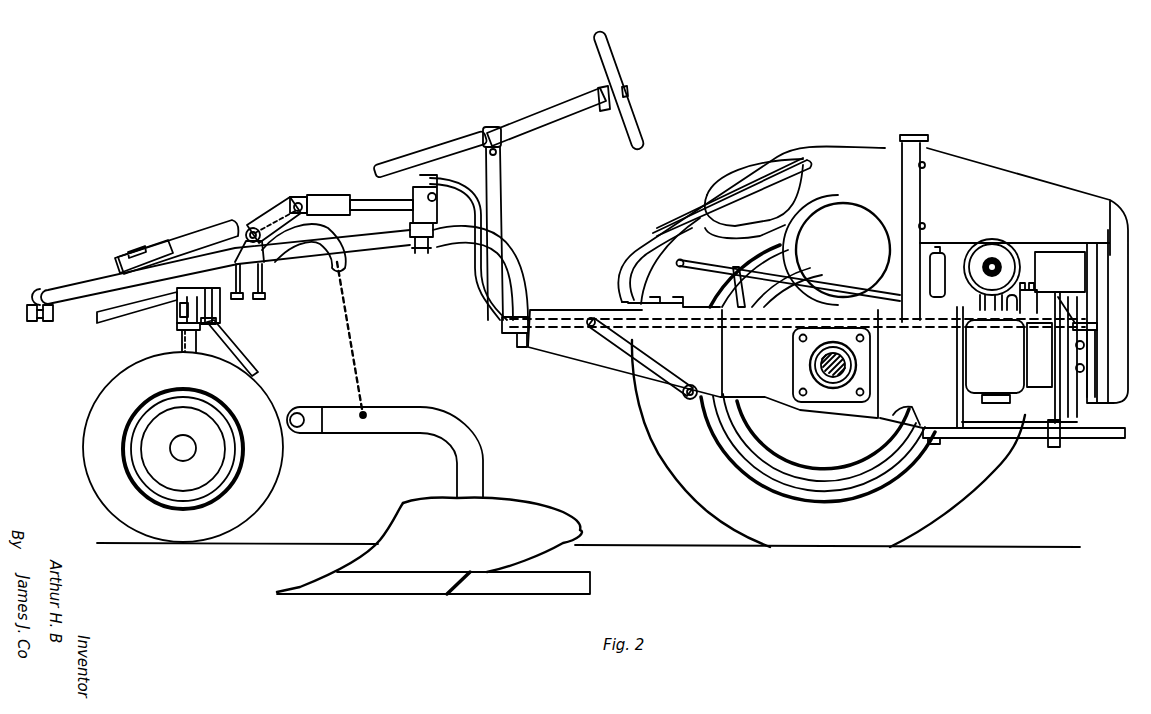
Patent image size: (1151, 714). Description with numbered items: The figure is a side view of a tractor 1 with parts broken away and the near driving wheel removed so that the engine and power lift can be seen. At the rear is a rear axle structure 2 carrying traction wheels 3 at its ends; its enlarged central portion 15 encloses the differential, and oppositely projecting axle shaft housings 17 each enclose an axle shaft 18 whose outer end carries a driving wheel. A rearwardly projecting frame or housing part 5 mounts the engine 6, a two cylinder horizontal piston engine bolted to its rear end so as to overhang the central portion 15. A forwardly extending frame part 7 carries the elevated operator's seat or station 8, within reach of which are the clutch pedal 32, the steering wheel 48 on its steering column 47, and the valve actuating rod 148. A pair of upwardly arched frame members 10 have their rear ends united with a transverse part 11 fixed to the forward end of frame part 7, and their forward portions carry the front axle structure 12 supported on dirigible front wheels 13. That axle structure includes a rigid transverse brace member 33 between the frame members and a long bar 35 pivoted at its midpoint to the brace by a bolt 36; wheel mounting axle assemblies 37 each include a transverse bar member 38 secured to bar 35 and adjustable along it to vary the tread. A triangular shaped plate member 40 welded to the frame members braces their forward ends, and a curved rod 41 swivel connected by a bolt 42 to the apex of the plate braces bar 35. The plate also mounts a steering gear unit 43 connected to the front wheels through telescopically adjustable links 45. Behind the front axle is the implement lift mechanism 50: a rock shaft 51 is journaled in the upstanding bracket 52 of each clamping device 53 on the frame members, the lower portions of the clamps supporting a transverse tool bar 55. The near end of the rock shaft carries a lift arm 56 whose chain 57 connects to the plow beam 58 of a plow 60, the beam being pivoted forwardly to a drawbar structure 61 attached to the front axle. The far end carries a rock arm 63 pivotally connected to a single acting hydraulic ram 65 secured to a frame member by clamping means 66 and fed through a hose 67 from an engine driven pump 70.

The tractor 1 is at (873, 281).
The rear axle structure 2 is at (800, 364).
The traction wheels 3 is at (963, 500).
The rearwardly projecting frame or housing part 5 is at (893, 420).
The engine 6 is at (995, 361).
The forwardly extending frame part 7 is at (580, 310).
The operator's seat or station 8 is at (695, 222).
The upwardly arched frame members 10 is at (460, 251).
The transverse part 11 is at (514, 340).
The front axle structure 12 is at (184, 310).
The dirigible front wheels 13 is at (282, 492).
The enlarged central portion 15 is at (786, 290).
The axle shaft housings 17 is at (855, 362).
The axle shaft 18 is at (822, 366).
The clutch pedal 32 is at (626, 352).
The rigid transverse brace member 33 is at (220, 305).
The bar 35 is at (197, 340).
The bolt 36 is at (222, 316).
The wheel mounting axle assemblies 37 is at (178, 340).
The transverse bar member 38 is at (184, 340).
The triangular shaped plate member 40 is at (92, 285).
The curved rod 41 is at (38, 297).
The bolt 42 is at (30, 321).
The steering gear unit 43 is at (139, 250).
The telescopically adjustable links 45 is at (103, 314).
The steering column 47 is at (411, 158).
The steering wheel 48 is at (640, 140).
The implement lift mechanism 50 is at (273, 214).
The rock shaft 51 is at (240, 222).
The upstanding bracket 52 is at (243, 255).
The clamping device 53 is at (266, 282).
The transverse bar 55 is at (265, 296).
The lift arm 56 is at (318, 236).
The chain 57 is at (357, 331).
The plow beam 58 is at (413, 402).
The plow 60 is at (433, 546).
The drawbar structure 61 is at (248, 355).
The rock arm 63 is at (298, 203).
The single acting hydraulic ram 65 is at (340, 196).
The clamping means 66 is at (416, 252).
The hose 67 is at (474, 310).
The engine driven pump 70 is at (1097, 352).
The valve actuating rod 148 is at (700, 276).